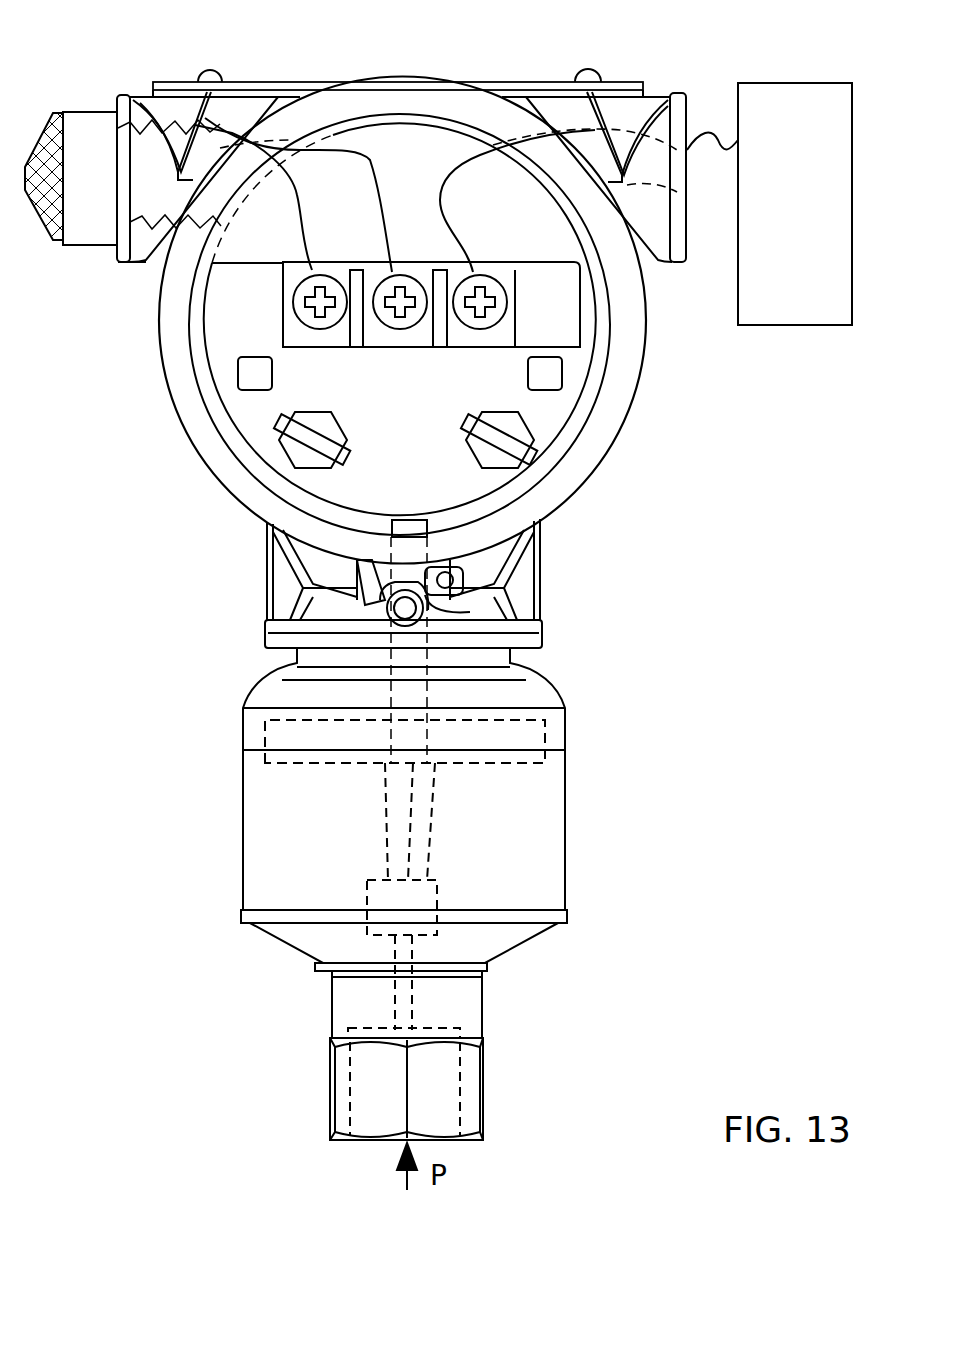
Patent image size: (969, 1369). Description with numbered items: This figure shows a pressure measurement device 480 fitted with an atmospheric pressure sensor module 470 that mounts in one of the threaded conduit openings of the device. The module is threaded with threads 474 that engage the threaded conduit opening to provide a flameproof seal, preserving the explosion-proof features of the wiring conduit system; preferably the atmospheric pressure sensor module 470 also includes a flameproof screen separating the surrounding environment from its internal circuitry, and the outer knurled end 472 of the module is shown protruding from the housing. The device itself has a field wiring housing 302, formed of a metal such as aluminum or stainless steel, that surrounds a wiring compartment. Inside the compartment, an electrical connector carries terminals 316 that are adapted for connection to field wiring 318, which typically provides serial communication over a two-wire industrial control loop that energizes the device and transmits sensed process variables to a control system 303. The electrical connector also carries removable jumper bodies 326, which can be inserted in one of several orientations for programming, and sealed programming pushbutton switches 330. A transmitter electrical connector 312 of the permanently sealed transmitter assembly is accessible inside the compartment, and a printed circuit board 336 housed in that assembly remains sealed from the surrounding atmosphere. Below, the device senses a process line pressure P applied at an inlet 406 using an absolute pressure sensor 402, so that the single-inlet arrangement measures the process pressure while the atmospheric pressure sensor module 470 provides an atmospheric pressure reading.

The field wiring housing 302 is at (160, 376).
The control system 303 is at (812, 223).
The transmitter electrical connector 312 is at (388, 692).
The terminals 316 is at (341, 244).
The field wiring 318 is at (724, 92).
The removable jumper body 326 is at (316, 443).
The sealed programming pushbutton switches 330 is at (255, 368).
The printed circuit board 336 is at (337, 763).
The absolute pressure sensor 402 is at (370, 886).
The inlet 406 is at (350, 1076).
The atmospheric pressure sensor module 470 is at (92, 112).
The knurled knob 472 is at (38, 138).
The threads 474 is at (143, 263).
The pressure measurement device 480 is at (253, 76).